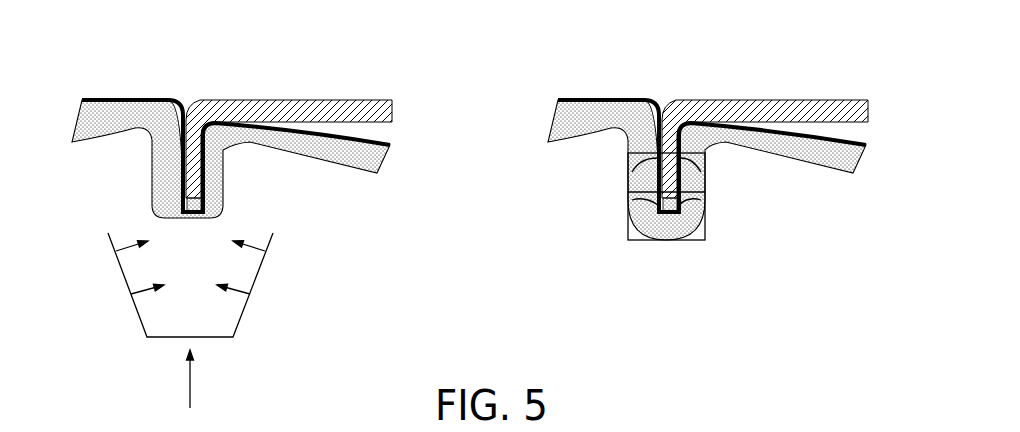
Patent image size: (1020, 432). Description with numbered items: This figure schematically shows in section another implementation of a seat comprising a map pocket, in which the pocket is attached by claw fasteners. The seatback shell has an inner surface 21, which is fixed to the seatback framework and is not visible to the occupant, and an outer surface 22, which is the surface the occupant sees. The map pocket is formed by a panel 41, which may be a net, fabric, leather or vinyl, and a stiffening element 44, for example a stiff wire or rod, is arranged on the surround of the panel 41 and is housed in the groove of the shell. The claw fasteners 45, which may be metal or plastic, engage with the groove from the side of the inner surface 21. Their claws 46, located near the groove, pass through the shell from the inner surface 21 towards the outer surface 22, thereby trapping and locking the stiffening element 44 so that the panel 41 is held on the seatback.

The inner surface 21 is at (357, 171).
The outer surface 22 is at (378, 141).
The panel 41 is at (355, 102).
The stiffening element 44 is at (203, 203).
The claw fasteners 45 is at (253, 288).
The claws 46 is at (244, 249).